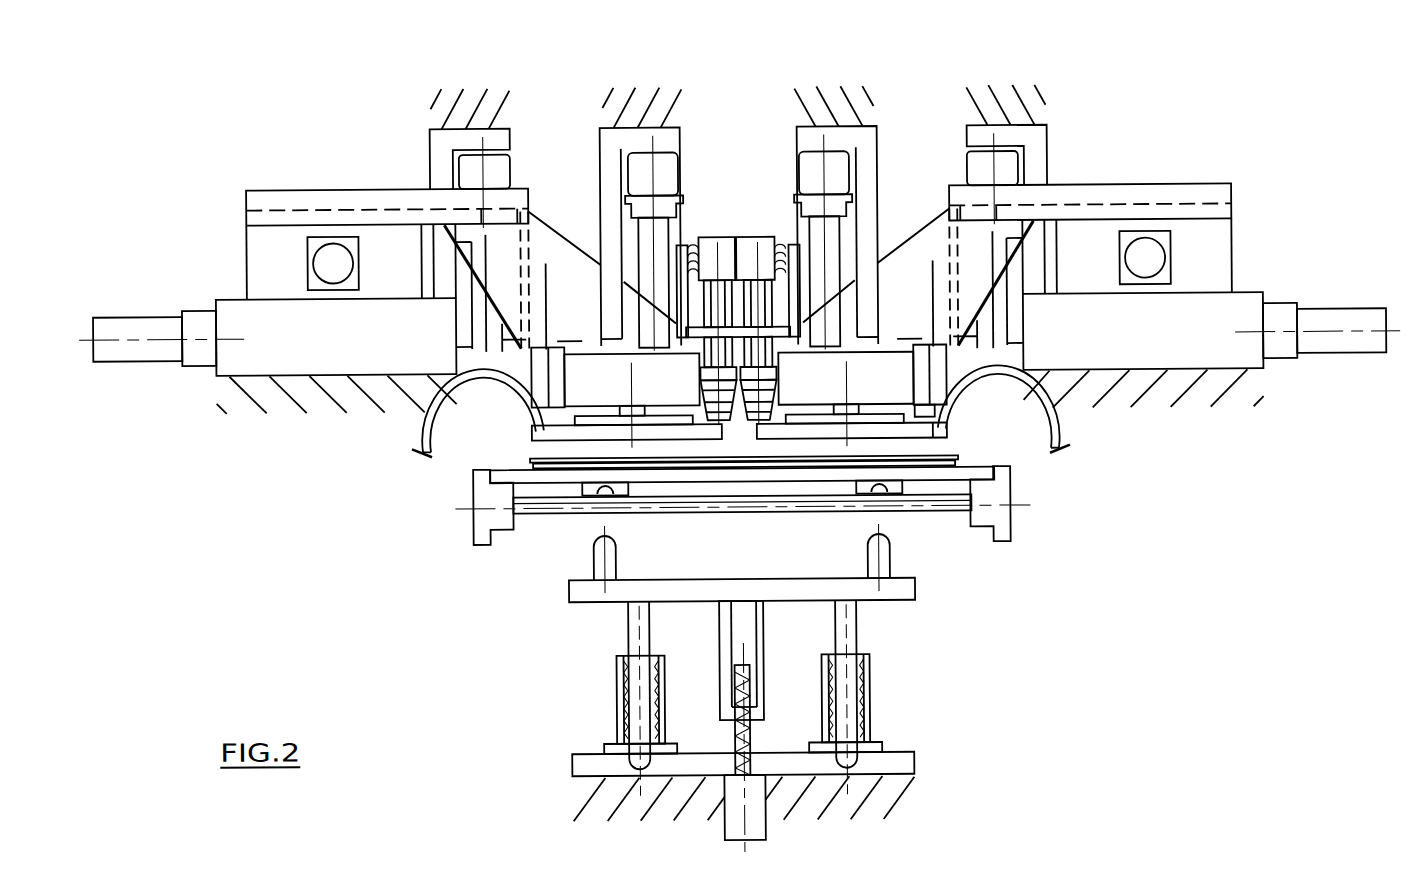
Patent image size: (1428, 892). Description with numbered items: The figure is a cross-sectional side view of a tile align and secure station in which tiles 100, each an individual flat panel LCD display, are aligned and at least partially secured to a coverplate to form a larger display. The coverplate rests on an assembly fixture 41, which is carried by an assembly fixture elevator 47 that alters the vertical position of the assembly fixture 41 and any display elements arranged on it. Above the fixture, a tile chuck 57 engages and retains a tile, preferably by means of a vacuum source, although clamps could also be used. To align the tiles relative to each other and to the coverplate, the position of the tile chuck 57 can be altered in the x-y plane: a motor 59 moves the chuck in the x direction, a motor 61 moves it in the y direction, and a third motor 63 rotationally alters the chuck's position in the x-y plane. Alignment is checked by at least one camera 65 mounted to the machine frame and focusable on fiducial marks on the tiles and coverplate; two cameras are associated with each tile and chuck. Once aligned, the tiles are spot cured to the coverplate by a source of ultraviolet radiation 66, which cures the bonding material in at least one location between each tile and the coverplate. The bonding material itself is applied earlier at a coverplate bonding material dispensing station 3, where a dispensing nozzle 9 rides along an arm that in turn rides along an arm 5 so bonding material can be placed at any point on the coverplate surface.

The coverplate bonding material dispensing station 3 is at (560, 486).
The arm 5 is at (565, 517).
The dispensing nozzle 9 is at (760, 739).
The assembly fixture 41 is at (921, 490).
The assembly fixture elevator 47 is at (898, 605).
The tile chuck 57 is at (932, 444).
The motor 59 is at (1236, 251).
The motor 61 is at (1262, 294).
The third motor 63 is at (918, 380).
The camera 65 is at (882, 130).
The source of ultraviolet radiation 66 is at (419, 436).
The tiles 100 is at (556, 456).